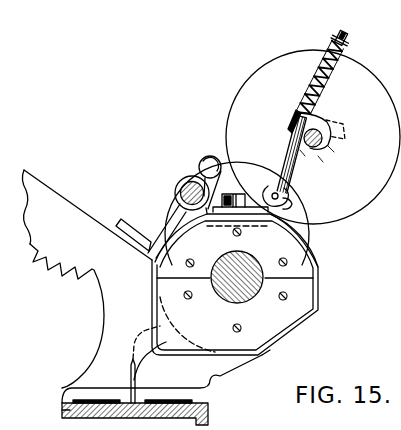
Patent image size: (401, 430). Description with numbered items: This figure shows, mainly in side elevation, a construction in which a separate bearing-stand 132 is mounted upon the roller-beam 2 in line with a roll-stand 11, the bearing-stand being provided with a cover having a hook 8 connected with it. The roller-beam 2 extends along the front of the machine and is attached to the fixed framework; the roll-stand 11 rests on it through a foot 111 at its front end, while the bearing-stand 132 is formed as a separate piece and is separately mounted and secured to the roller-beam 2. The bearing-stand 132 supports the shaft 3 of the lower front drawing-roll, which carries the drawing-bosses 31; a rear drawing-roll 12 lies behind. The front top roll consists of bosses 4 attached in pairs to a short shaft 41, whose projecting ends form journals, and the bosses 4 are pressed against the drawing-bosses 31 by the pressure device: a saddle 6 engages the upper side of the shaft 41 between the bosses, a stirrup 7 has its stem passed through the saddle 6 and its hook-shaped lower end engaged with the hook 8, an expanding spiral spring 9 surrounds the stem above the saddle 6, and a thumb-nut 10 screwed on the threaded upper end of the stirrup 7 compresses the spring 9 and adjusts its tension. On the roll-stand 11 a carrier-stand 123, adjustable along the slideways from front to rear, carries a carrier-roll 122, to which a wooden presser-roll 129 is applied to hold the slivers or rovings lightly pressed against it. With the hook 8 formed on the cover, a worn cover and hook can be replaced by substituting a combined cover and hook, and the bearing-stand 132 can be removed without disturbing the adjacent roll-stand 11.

The roller-beam 2 is at (210, 410).
The shaft of the lower front drawing-roll 3 is at (250, 287).
The bosses of the front top rolls 4 is at (226, 120).
The saddle 6 is at (290, 127).
The stirrup 7 is at (280, 162).
The hook 8 is at (292, 195).
The expanding spiral spring 9 is at (307, 78).
The thumb-nut 10 is at (333, 48).
The roll-stand 11 is at (87, 253).
The rear drawing-roll 12 is at (36, 415).
The drawing-bosses 31 is at (313, 250).
The short shaft 41 is at (321, 147).
The feet 111 is at (105, 370).
The carrier-roll 122 is at (175, 183).
The carrier-stand 123 is at (170, 221).
The presser-roll 129 is at (199, 163).
The bearing-stand 132 is at (218, 370).